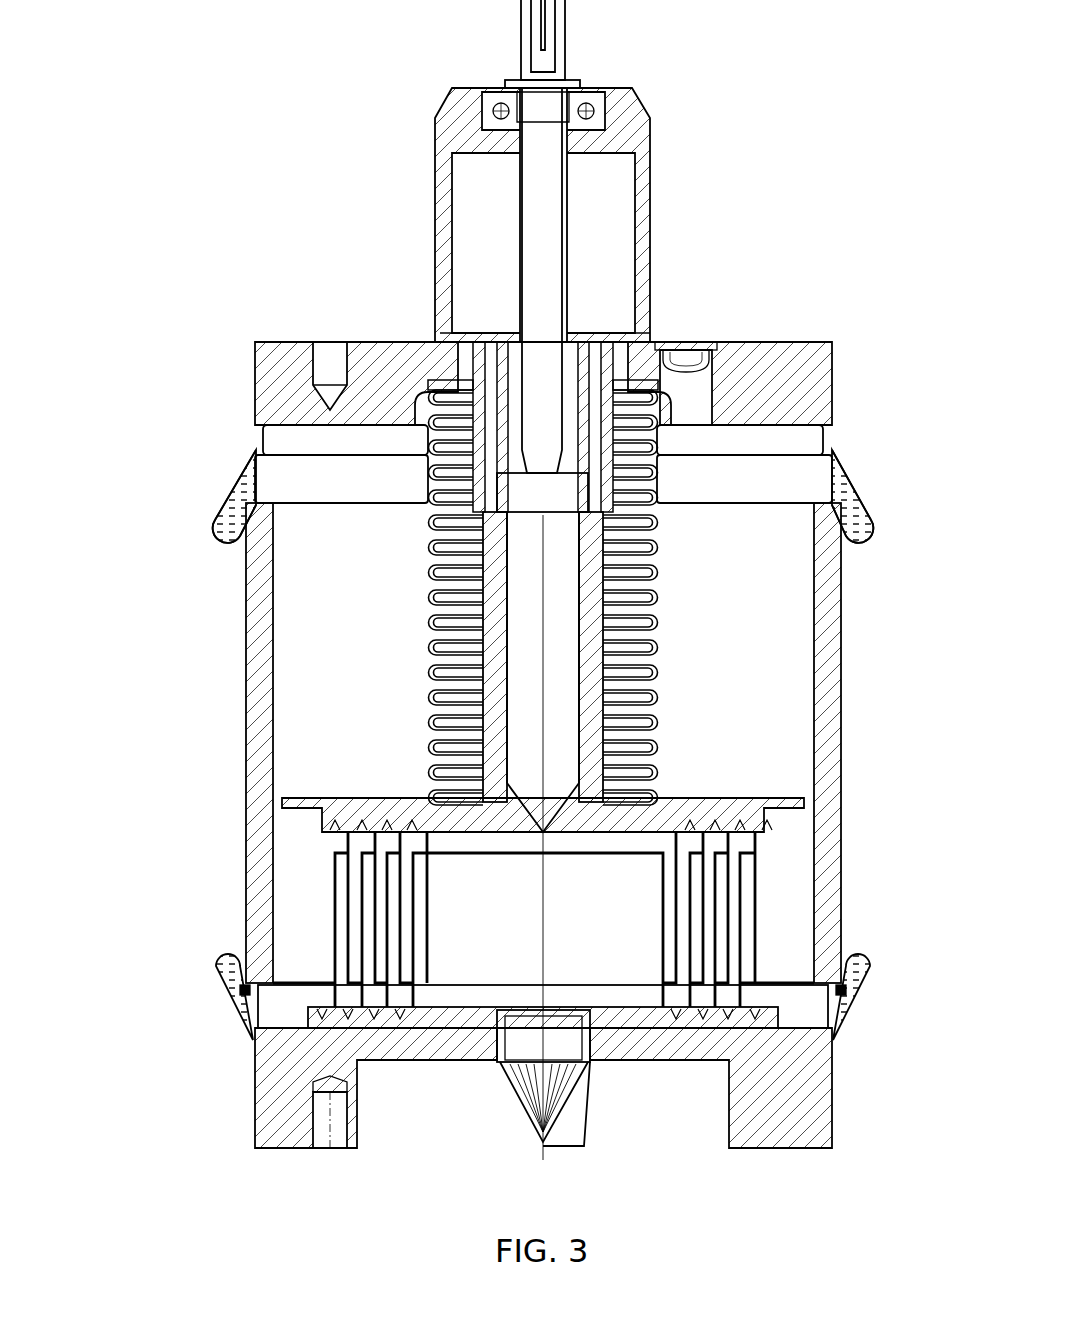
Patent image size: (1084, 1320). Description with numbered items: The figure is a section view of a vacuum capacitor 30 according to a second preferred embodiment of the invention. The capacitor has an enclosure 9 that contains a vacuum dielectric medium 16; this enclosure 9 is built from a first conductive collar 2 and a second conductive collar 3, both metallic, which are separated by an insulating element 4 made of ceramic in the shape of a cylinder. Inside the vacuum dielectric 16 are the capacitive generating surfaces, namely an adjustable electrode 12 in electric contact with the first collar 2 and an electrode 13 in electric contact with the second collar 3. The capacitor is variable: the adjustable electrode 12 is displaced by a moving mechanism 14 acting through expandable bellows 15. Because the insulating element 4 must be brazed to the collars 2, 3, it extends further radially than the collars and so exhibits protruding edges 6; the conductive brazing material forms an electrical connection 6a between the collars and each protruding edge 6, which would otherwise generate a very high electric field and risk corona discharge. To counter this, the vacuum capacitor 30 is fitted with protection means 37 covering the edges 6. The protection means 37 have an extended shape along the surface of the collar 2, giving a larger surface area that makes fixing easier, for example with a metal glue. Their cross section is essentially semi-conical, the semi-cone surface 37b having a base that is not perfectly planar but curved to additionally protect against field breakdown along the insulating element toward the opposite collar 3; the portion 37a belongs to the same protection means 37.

The vacuum capacitor 30 is at (727, 238).
The moving mechanism 14 is at (522, 283).
The enclosure 9 is at (753, 330).
The first conductive collar 2 is at (842, 385).
The protection means 37 is at (230, 467).
The semi-cone surface 37b is at (225, 495).
The clamp portion 37a is at (240, 507).
The electrical connection 6a is at (837, 500).
The protruding edge 6 is at (850, 505).
The insulating element 4 is at (858, 622).
The expandable bellows 15 is at (420, 655).
The adjustable electrode 12 is at (345, 803).
The vacuum dielectric medium 16 is at (790, 875).
The electrode 13 is at (315, 1003).
The second conductive collar 3 is at (847, 1110).